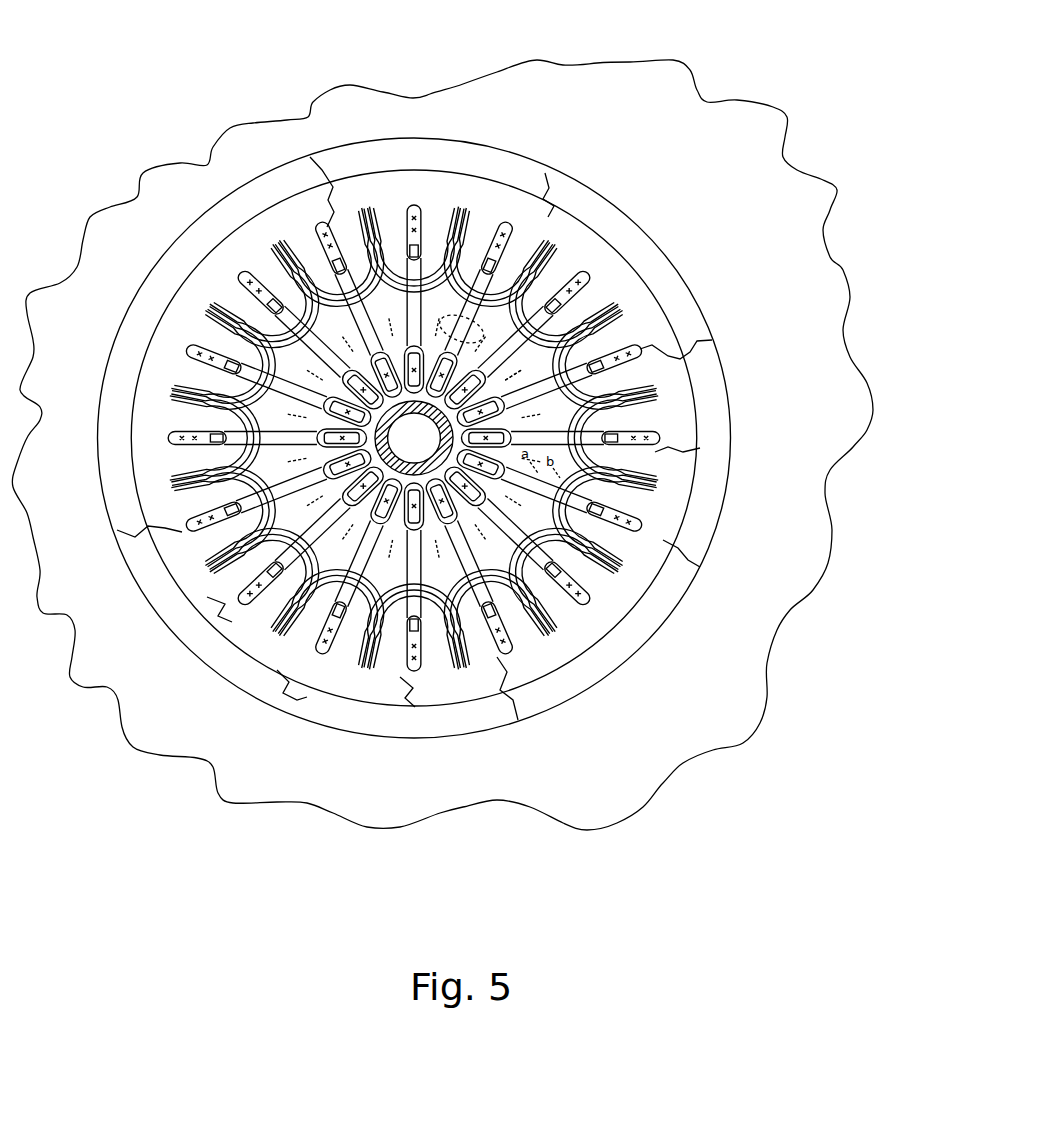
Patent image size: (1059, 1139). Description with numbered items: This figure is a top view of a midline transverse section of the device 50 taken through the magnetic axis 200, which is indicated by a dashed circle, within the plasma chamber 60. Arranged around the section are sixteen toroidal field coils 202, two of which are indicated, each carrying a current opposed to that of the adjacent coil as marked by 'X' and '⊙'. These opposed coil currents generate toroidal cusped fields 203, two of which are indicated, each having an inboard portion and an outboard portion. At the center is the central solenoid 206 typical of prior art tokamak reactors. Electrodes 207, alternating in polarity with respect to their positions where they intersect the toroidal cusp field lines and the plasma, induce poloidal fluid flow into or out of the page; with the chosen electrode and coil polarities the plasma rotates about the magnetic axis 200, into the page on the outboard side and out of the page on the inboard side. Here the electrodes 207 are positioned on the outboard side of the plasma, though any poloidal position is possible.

The device 50 is at (507, 385).
The plasma chamber 60 is at (143, 173).
The magnetic axis 200 is at (414, 386).
The toroidal field coils 202 is at (588, 276).
The toroidal cusped fields 203 is at (633, 402).
The central solenoid 206 is at (508, 386).
The electrodes 207 is at (455, 318).